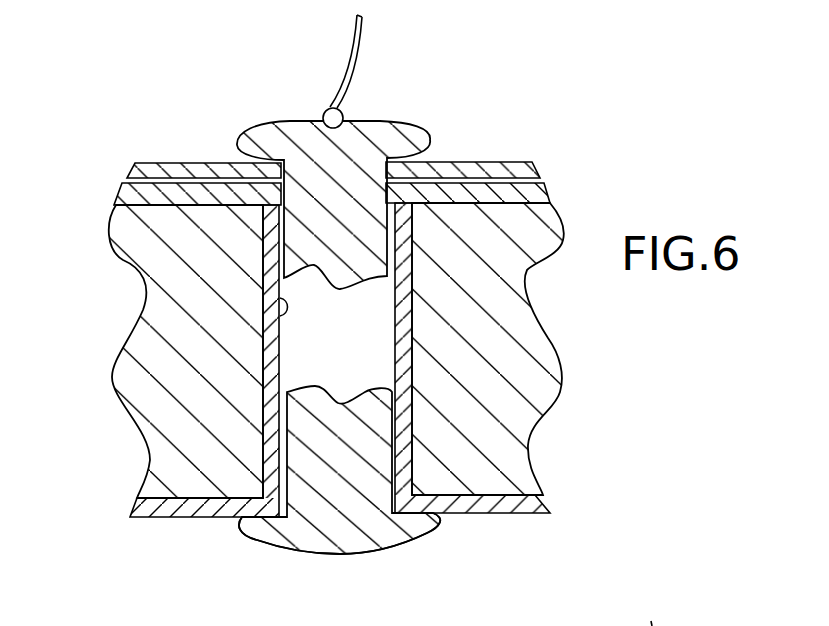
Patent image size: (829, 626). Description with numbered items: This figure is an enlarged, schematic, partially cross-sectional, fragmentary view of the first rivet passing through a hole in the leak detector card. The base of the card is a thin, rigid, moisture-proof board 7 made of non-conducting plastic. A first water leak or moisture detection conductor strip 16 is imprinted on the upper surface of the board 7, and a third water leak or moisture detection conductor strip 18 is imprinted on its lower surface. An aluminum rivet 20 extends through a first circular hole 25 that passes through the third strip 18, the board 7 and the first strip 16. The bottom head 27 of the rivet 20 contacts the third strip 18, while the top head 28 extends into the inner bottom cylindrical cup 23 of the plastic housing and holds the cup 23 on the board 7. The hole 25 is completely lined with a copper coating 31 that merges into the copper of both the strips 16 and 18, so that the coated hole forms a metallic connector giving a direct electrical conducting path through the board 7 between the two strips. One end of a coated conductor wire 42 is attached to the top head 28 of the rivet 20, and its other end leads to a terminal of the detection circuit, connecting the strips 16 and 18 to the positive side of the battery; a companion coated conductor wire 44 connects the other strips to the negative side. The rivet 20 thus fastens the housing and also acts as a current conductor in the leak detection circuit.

The board 7 is at (527, 385).
The first water leak or moisture detection conductor strip 16 is at (157, 193).
The third water leak or moisture detection conductor strip 18 is at (148, 505).
The rivet 20 is at (320, 480).
The inner bottom cylindrical cup 23 is at (473, 165).
The first circular hole 25 is at (282, 298).
The bottom head 27 is at (373, 553).
The top head 28 is at (380, 140).
The copper coating 31 is at (340, 334).
The coated conductor wire 42 is at (345, 52).
The coated conductor wire 44 is at (656, 610).